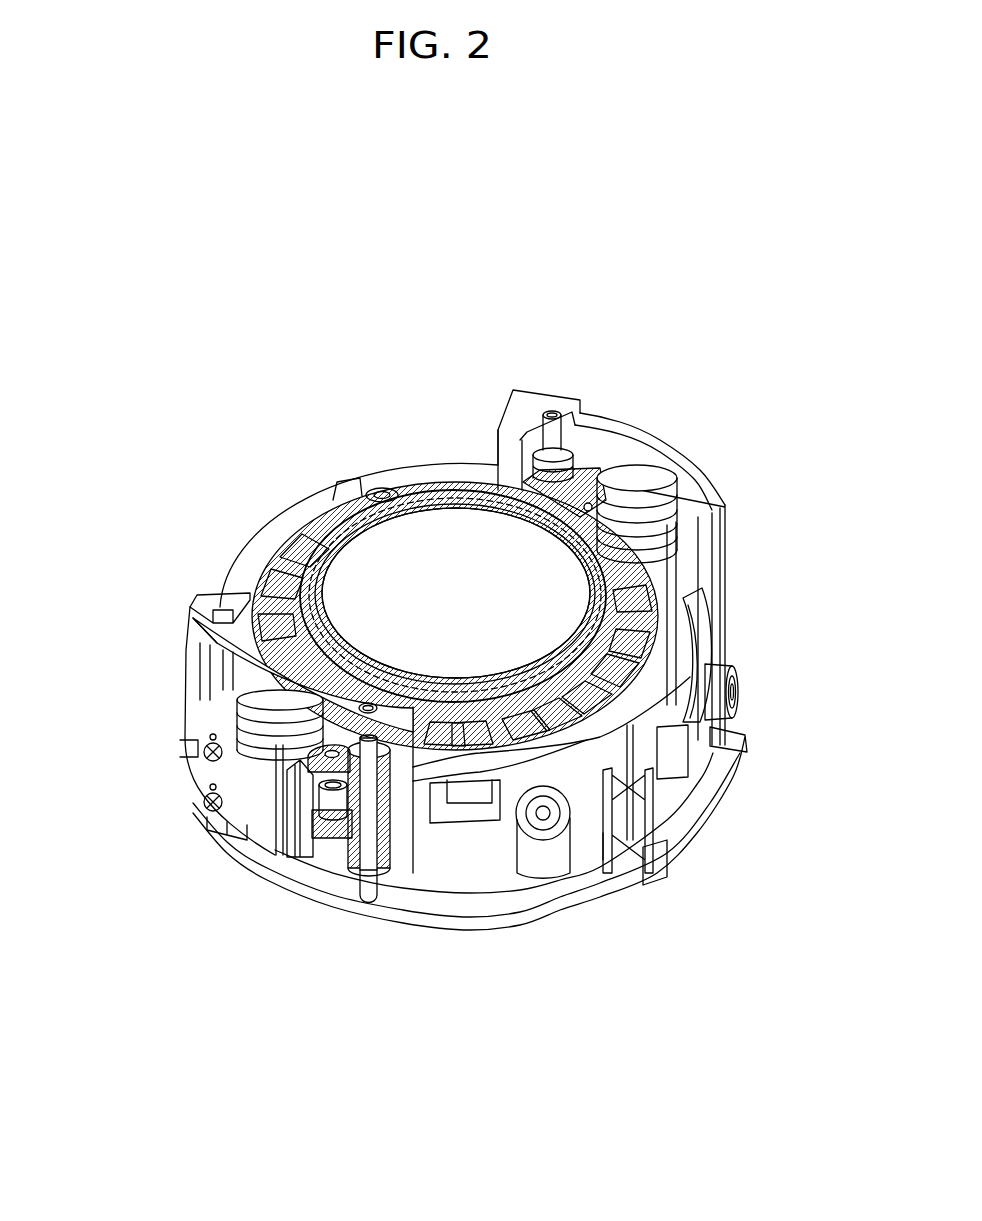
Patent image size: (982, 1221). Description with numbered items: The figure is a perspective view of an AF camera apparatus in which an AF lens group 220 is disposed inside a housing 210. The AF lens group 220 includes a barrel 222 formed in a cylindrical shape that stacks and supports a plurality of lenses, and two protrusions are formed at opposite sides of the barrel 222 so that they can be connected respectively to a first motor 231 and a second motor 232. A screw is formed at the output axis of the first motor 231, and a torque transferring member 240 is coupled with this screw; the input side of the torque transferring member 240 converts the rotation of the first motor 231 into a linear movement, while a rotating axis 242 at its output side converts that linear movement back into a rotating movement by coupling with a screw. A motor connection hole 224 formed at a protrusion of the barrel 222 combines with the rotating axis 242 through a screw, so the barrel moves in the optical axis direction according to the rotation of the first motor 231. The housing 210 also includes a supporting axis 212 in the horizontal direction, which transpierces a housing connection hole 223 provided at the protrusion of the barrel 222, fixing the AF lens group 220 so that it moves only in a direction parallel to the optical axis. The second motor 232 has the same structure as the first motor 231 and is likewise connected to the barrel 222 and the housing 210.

The housing 210 is at (603, 445).
The supporting axis 212 is at (372, 902).
The AF lens group 220 is at (368, 562).
The barrel 222 is at (298, 565).
The housing connection hole 223 is at (337, 787).
The motor connection hole 224 is at (332, 758).
The first motor 231 is at (225, 780).
The second motor 232 is at (622, 497).
The torque transferring member 240 is at (293, 803).
The rotating axis 242 is at (317, 840).